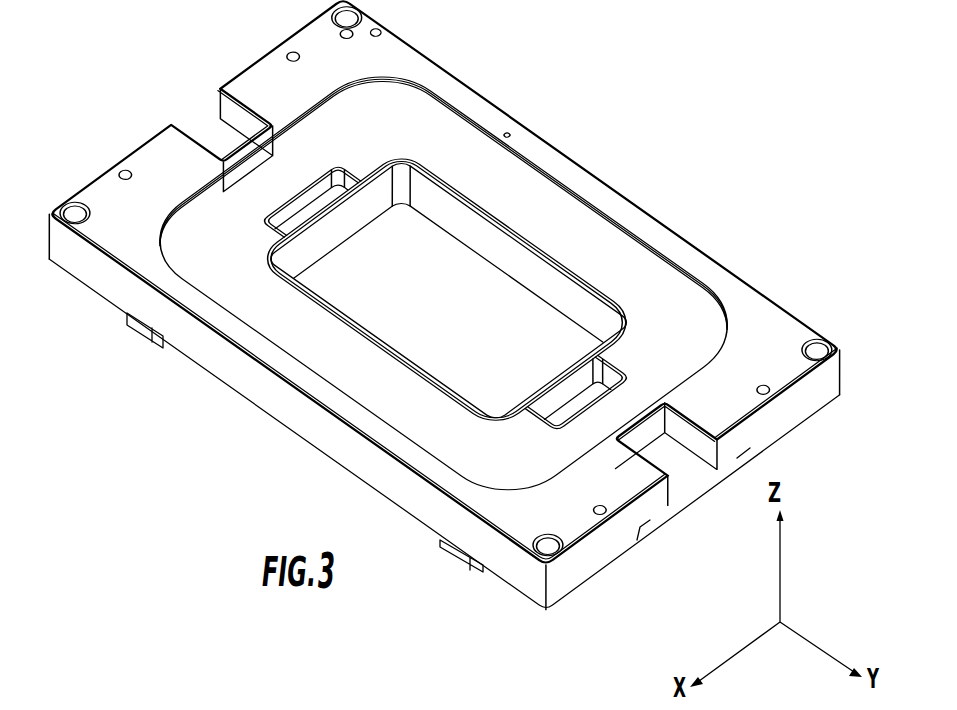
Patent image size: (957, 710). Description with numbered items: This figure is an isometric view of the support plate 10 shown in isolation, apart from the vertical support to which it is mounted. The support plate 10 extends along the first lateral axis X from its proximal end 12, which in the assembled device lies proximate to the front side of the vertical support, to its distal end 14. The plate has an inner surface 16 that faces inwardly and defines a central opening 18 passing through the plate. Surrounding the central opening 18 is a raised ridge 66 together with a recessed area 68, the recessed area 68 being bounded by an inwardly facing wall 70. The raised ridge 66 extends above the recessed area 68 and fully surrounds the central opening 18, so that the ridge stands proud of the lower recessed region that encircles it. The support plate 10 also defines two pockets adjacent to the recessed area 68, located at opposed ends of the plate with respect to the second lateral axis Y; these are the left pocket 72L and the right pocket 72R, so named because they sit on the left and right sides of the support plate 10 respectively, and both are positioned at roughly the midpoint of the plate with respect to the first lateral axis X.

The support plate 10 is at (444, 305).
The proximal end 12 is at (413, 62).
The distal end 14 is at (97, 281).
The inner surface 16 is at (567, 298).
The central opening 18 is at (450, 277).
The raised ridge 66 is at (330, 308).
The recessed area 68 is at (332, 383).
The inwardly facing wall 70 is at (223, 185).
The left pocket 72L is at (225, 138).
The right pocket 72R is at (673, 463).